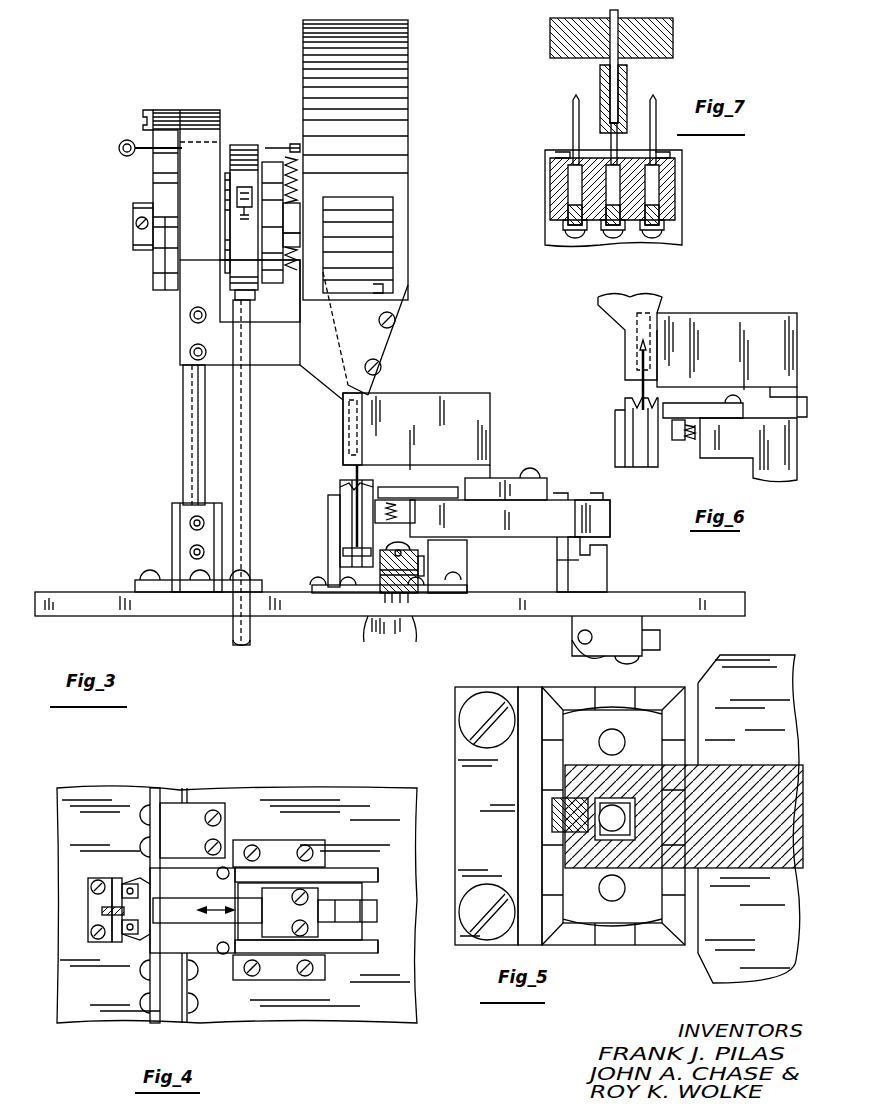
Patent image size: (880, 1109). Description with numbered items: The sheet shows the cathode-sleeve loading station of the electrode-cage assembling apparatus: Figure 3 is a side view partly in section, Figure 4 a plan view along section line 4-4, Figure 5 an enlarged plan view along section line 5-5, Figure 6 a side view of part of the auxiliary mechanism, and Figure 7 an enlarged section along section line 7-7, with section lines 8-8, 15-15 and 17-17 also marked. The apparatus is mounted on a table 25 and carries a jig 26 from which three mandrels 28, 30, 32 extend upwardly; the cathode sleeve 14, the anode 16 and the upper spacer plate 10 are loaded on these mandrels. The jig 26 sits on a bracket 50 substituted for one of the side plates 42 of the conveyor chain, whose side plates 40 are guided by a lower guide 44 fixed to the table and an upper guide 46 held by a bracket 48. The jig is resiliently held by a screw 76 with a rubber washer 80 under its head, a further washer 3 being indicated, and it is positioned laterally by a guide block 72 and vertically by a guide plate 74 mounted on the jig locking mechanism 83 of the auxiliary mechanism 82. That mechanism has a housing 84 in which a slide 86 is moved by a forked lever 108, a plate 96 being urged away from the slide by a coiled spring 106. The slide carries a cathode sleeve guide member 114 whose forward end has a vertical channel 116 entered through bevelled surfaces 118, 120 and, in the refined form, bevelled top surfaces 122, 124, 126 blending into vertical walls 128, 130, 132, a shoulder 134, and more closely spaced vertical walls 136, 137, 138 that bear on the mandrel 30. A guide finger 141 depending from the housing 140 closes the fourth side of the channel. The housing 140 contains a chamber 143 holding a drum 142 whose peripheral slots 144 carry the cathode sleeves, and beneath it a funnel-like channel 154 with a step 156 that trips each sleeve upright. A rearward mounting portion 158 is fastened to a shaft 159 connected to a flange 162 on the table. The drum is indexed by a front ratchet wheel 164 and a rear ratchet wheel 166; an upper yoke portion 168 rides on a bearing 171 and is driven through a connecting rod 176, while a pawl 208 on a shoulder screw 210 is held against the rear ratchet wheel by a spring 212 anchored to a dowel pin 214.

In FIG. 3, the washer 3 is at (424, 560).
In FIG. 3, the section line 4- 4 is at (330, 391).
In FIG. 3, the section line 5- 5 is at (345, 412).
In FIG. 3, the section line 7- 7 is at (355, 383).
In FIG. 3, the section line 8- 8 is at (343, 512).
In FIG. 3, the spacer plate 10 is at (595, 478).
In FIG. 7, the cathode sleeve 14 is at (625, 65).
In FIG. 3, the section line 15- 15 is at (300, 128).
In FIG. 3, the anode 16 is at (178, 133).
In FIG. 3, the section line 17- 17 is at (260, 130).
In FIG. 3, the table 25 is at (68, 592).
In FIG. 4, the table 25 is at (82, 788).
In FIG. 3, the jig 26 is at (340, 492).
In FIG. 6, the jig 26 is at (615, 420).
In FIG. 7, the jig 26 is at (550, 198).
In FIG. 5, the mandrel 28 is at (618, 737).
In FIG. 7, the mandrel 28 is at (572, 132).
In FIG. 3, the mandrel 30 is at (354, 474).
In FIG. 5, the mandrel 30 is at (622, 828).
In FIG. 6, the mandrel 30 is at (640, 400).
In FIG. 7, the mandrel 30 is at (611, 152).
In FIG. 5, the mandrel 32 is at (602, 902).
In FIG. 7, the mandrel 32 is at (655, 143).
In FIG. 3, the side plate 40 is at (402, 552).
In FIG. 3, the side plate 42 is at (415, 585).
In FIG. 3, the lower guide 44 is at (410, 600).
In FIG. 3, the upper guide 46 is at (397, 550).
In FIG. 3, the bracket 48 is at (436, 570).
In FIG. 3, the bracket 50 is at (375, 600).
In FIG. 3, the guide block 72 is at (328, 550).
In FIG. 4, the guide block 72 is at (88, 926).
In FIG. 5, the guide block 72 is at (528, 687).
In FIG. 3, the guide plate 74 is at (395, 494).
In FIG. 4, the guide plate 74 is at (200, 955).
In FIG. 5, the guide plate 74 is at (713, 968).
In FIG. 3, the screw 76 is at (348, 563).
In FIG. 3, the washer 80 is at (362, 565).
In FIG. 3, the auxiliary mechanism 82 is at (478, 475).
In FIG. 3, the jig locking mechanism 83 is at (512, 546).
In FIG. 3, the housing 84 is at (610, 532).
In FIG. 4, the housing 84 is at (377, 950).
In FIG. 6, the housing 84 is at (740, 468).
In FIG. 4, the slide 86 is at (340, 955).
In FIG. 6, the plate 96 is at (676, 440).
In FIG. 6, the coiled spring 106 is at (696, 442).
In FIG. 3, the forked lever 108 is at (607, 560).
In FIG. 3, the cathode sleeve guide member 114 is at (490, 402).
In FIG. 4, the cathode sleeve guide member 114 is at (172, 928).
In FIG. 5, the cathode sleeve guide member 114 is at (738, 868).
In FIG. 6, the cathode sleeve guide member 114 is at (757, 313).
In FIG. 5, the vertical channel 116 is at (594, 812).
In FIG. 5, the bevelled surface 118 is at (592, 798).
In FIG. 5, the bevelled surface 120 is at (576, 856).
In FIG. 4, the bevelled top surface 122 is at (126, 884).
In FIG. 4, the bevelled top surface 124 is at (146, 900).
In FIG. 4, the bevelled top surface 126 is at (128, 936).
In FIG. 5, the vertical wall 128 is at (632, 800).
In FIG. 5, the vertical wall 130 is at (620, 845).
In FIG. 5, the vertical wall 132 is at (605, 845).
In FIG. 5, the shoulder 134 is at (624, 850).
In FIG. 5, the vertical wall 136 is at (598, 800).
In FIG. 5, the vertical wall 137 is at (636, 818).
In FIG. 5, the vertical wall 138 is at (601, 842).
In FIG. 3, the housing 140 is at (450, 76).
In FIG. 7, the housing 140 is at (550, 34).
In FIG. 3, the guide finger 141 is at (343, 442).
In FIG. 4, the guide finger 141 is at (102, 910).
In FIG. 5, the guide finger 141 is at (552, 828).
In FIG. 6, the guide finger 141 is at (625, 349).
In FIG. 7, the guide finger 141 is at (600, 84).
In FIG. 3, the drum 142 is at (382, 235).
In FIG. 3, the chamber 143 is at (398, 208).
In FIG. 3, the peripheral slot 144 is at (385, 268).
In FIG. 3, the funnel-like channel 154 is at (385, 345).
In FIG. 3, the step 156 is at (388, 290).
In FIG. 3, the mounting portion 158 is at (180, 347).
In FIG. 3, the shaft 159 is at (183, 440).
In FIG. 3, the flange 162 is at (172, 518).
In FIG. 3, the front ratchet wheel 164 is at (296, 215).
In FIG. 3, the rear ratchet wheel 166 is at (133, 202).
In FIG. 3, the upper yoke portion 168 is at (243, 145).
In FIG. 3, the bearing 171 is at (225, 242).
In FIG. 3, the connecting rod 176 is at (233, 300).
In FIG. 3, the pawl 208 is at (168, 115).
In FIG. 3, the shoulder screw 210 is at (150, 116).
In FIG. 3, the spring 212 is at (125, 140).
In FIG. 3, the dowel pin 214 is at (150, 152).